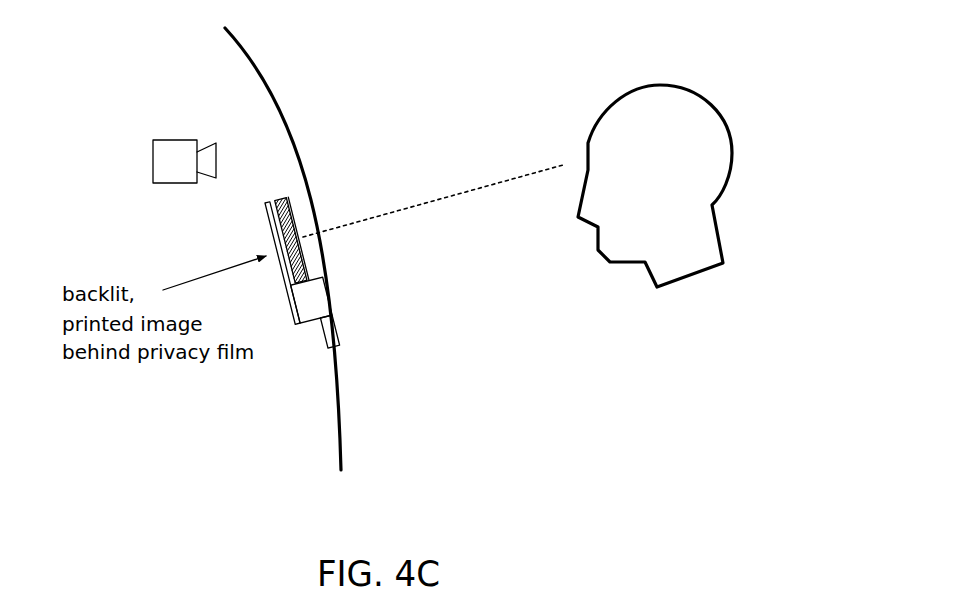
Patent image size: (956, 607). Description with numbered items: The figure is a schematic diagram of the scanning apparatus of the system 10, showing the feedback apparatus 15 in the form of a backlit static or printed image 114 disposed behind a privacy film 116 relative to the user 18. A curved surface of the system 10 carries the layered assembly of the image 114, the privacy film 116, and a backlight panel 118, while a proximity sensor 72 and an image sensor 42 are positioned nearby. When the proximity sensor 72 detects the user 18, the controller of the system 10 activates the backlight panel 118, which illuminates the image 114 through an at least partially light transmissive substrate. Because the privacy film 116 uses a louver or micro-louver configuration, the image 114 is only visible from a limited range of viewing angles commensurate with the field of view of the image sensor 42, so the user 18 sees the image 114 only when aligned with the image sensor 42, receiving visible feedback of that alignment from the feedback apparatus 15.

The system 10 is at (327, 66).
The feedback apparatus 15 is at (366, 275).
The user 18 is at (690, 227).
The image sensor 42 is at (160, 162).
The proximity sensor 72 is at (330, 326).
The image 114 is at (269, 203).
The privacy film 116 is at (287, 208).
The backlight panel 118 is at (270, 230).